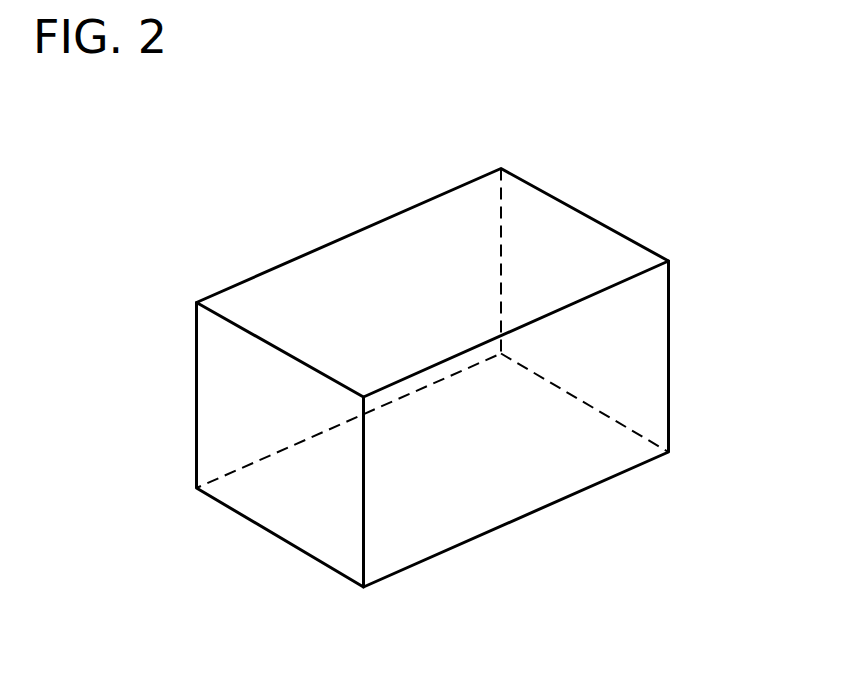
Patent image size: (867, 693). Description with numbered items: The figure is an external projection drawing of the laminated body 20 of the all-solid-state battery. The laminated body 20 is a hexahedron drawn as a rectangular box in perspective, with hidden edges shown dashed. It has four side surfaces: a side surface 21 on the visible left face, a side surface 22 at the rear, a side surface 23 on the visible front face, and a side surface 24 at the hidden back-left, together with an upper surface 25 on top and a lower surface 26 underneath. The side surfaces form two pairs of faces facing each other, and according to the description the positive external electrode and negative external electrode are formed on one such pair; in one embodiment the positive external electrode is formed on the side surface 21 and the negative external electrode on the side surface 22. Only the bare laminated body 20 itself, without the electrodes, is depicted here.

The laminated body 20 is at (540, 136).
The side surface 21 is at (267, 413).
The side surface 22 is at (577, 342).
The side surface 23 is at (552, 433).
The side surface 24 is at (373, 313).
The upper surface 25 is at (438, 243).
The lower surface 26 is at (438, 466).